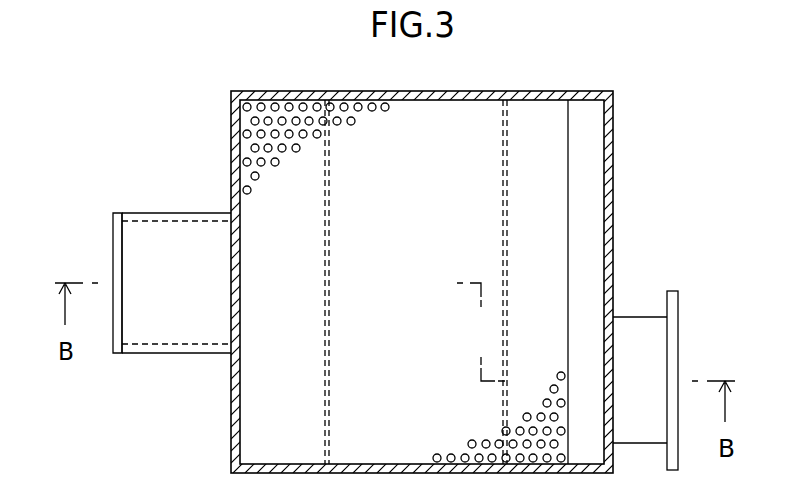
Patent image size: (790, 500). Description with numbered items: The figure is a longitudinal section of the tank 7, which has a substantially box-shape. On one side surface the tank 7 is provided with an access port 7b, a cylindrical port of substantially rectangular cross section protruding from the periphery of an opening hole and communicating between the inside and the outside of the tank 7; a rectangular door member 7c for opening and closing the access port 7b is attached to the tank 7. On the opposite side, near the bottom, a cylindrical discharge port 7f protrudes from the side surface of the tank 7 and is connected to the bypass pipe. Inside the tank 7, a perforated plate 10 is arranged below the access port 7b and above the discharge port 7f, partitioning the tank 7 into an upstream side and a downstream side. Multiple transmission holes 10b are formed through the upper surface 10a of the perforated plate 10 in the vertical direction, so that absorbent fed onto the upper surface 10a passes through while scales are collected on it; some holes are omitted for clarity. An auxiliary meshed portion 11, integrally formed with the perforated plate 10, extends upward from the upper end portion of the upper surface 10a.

The tank 7 is at (363, 246).
The access port 7b is at (174, 240).
The door member 7c is at (118, 230).
The discharge port 7f is at (640, 337).
The perforated plate 10 is at (265, 422).
The upper surface 10a is at (434, 273).
The transmission holes 10b is at (354, 123).
The auxiliary meshed portion 11 is at (584, 185).